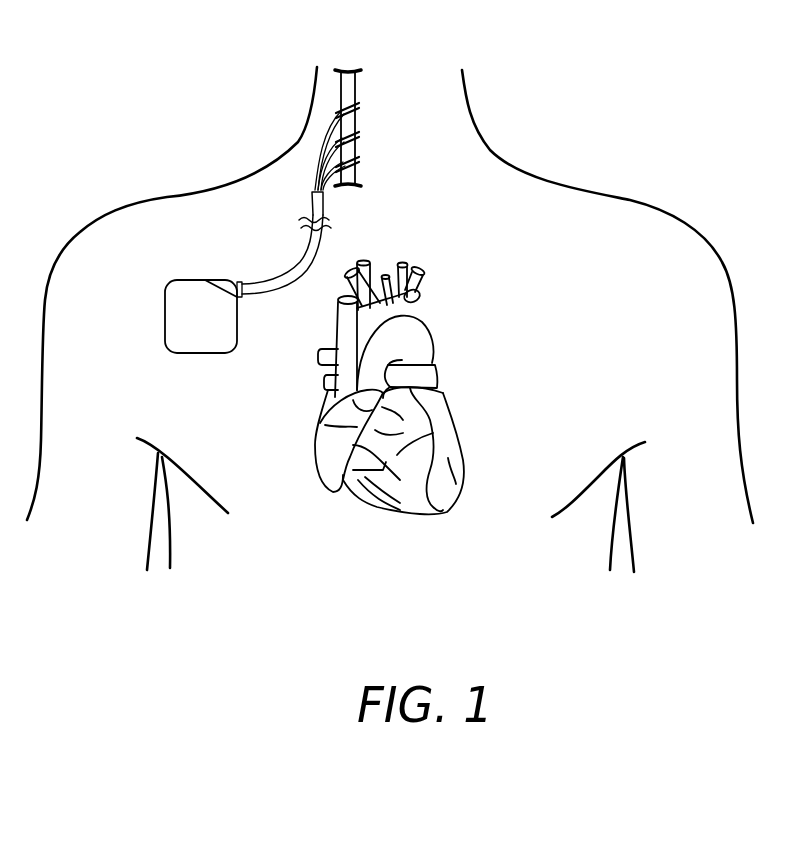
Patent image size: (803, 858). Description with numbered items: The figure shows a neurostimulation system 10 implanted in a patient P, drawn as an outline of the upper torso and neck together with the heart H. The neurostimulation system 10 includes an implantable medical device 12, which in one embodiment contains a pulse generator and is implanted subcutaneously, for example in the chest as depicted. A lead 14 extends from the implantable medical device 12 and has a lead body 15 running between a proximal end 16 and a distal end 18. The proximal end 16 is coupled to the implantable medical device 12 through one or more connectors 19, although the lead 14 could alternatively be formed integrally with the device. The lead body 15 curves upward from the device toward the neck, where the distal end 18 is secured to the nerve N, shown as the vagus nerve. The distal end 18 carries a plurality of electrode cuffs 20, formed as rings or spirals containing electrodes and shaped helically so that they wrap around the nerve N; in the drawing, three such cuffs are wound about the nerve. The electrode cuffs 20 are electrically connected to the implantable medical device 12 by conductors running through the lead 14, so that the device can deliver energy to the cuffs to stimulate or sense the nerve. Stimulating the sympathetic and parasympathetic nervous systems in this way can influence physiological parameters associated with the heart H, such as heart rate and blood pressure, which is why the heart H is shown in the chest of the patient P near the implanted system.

The neurostimulation system 10 is at (226, 199).
The implantable medical device 12 is at (178, 318).
The lead 14 is at (255, 233).
The lead body 15 is at (303, 249).
The proximal end 16 is at (247, 302).
The distal end 18 is at (316, 137).
The connector 19 is at (240, 284).
The electrode cuffs 20 is at (380, 151).
The nerve N is at (350, 88).
The heart H is at (430, 345).
The patient P is at (590, 208).